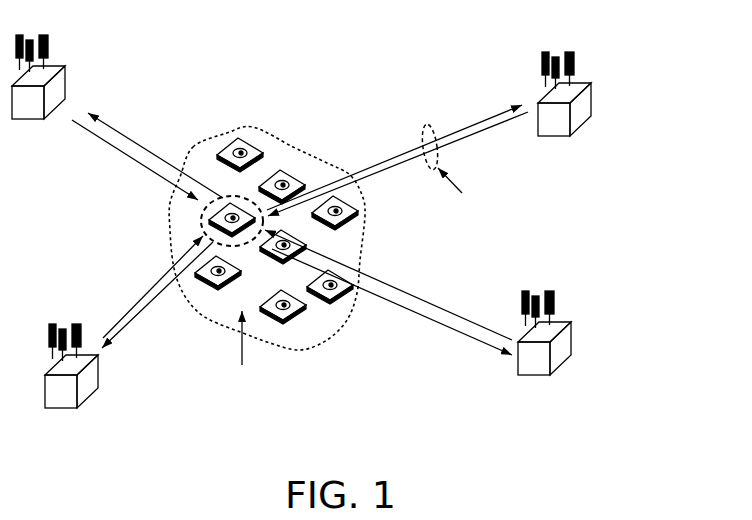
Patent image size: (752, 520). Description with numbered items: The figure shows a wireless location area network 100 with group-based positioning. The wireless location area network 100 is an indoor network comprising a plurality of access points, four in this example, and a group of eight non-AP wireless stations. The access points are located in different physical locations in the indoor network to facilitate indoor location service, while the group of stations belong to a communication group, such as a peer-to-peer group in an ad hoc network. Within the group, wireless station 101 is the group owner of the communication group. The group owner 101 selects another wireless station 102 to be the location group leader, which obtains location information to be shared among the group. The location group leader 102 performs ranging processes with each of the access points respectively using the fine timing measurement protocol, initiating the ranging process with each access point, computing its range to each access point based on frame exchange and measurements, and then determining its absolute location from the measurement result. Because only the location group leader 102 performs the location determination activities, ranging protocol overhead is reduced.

The wireless location area network 100 is at (702, 50).
The group owner 101 is at (296, 324).
The location group leader 102 is at (203, 219).